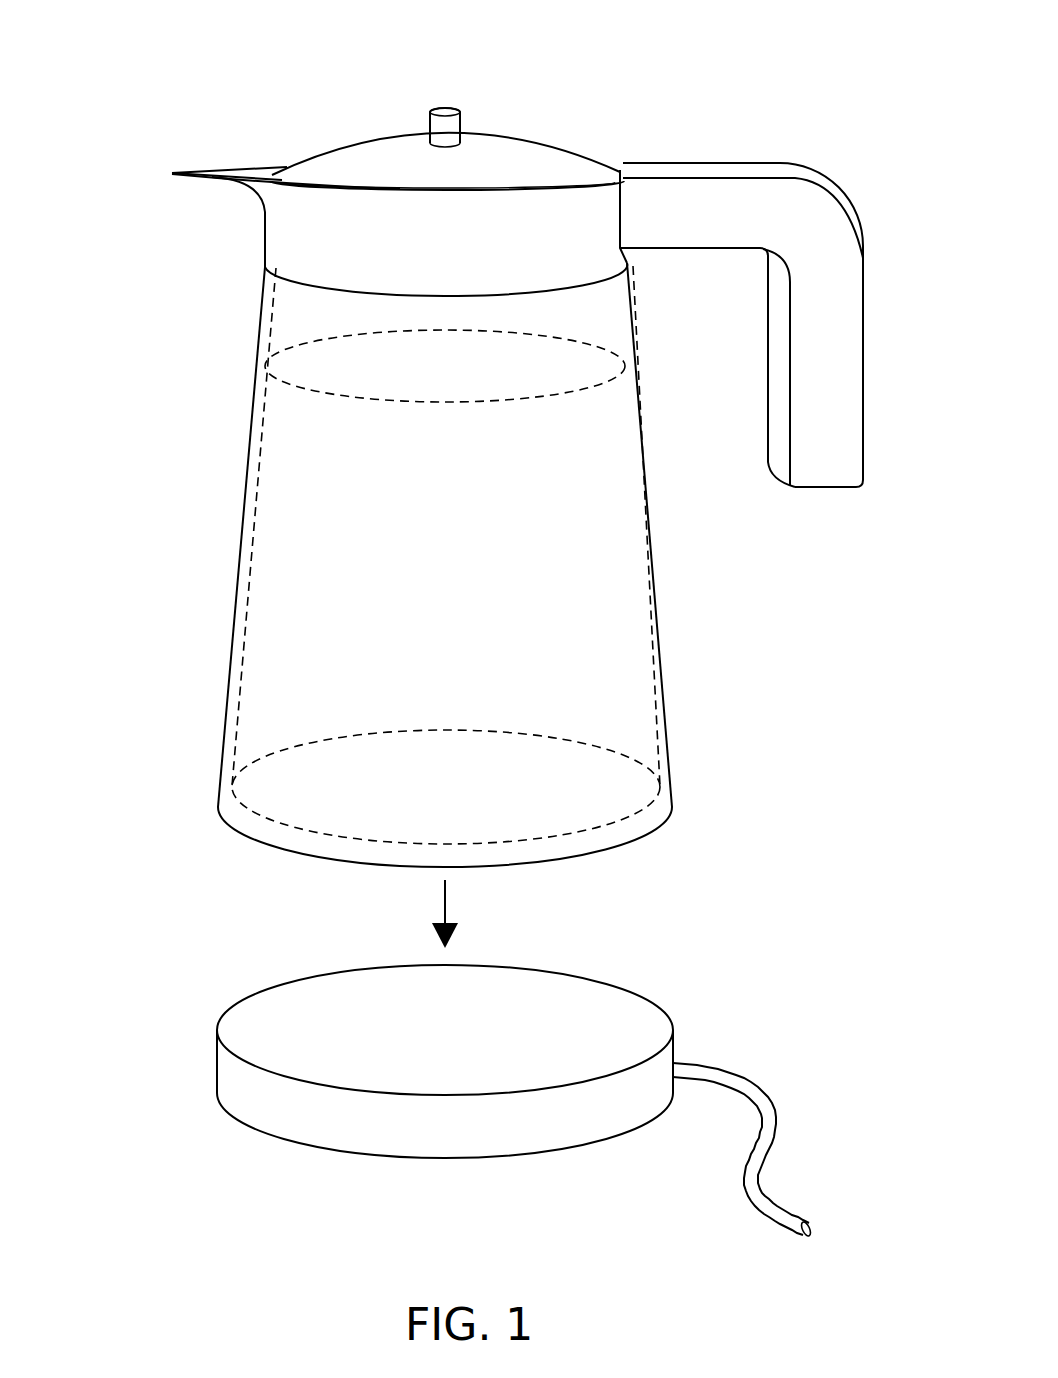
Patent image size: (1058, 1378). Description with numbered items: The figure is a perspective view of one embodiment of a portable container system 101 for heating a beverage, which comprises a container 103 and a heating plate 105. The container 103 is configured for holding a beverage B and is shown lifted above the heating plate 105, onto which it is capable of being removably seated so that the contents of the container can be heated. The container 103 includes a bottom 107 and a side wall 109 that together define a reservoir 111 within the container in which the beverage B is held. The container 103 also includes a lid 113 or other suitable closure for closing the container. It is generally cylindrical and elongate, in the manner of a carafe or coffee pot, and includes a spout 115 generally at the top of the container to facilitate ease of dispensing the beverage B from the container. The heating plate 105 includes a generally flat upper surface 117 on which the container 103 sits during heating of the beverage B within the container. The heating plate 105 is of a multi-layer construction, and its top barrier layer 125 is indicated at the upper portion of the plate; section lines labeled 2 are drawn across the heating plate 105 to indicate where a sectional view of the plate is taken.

The portable container system 101 is at (640, 74).
The container 103 is at (253, 412).
The heating plate 105 is at (195, 1056).
The bottom 107 is at (618, 846).
The side wall 109 is at (661, 625).
The reservoir 111 is at (578, 300).
The lid 113 is at (500, 135).
The spout 115 is at (188, 170).
The upper surface 117 is at (592, 1010).
The top barrier layer 125 is at (252, 1022).
The beverage B is at (318, 333).
The section line 2- 2 is at (310, 1030).